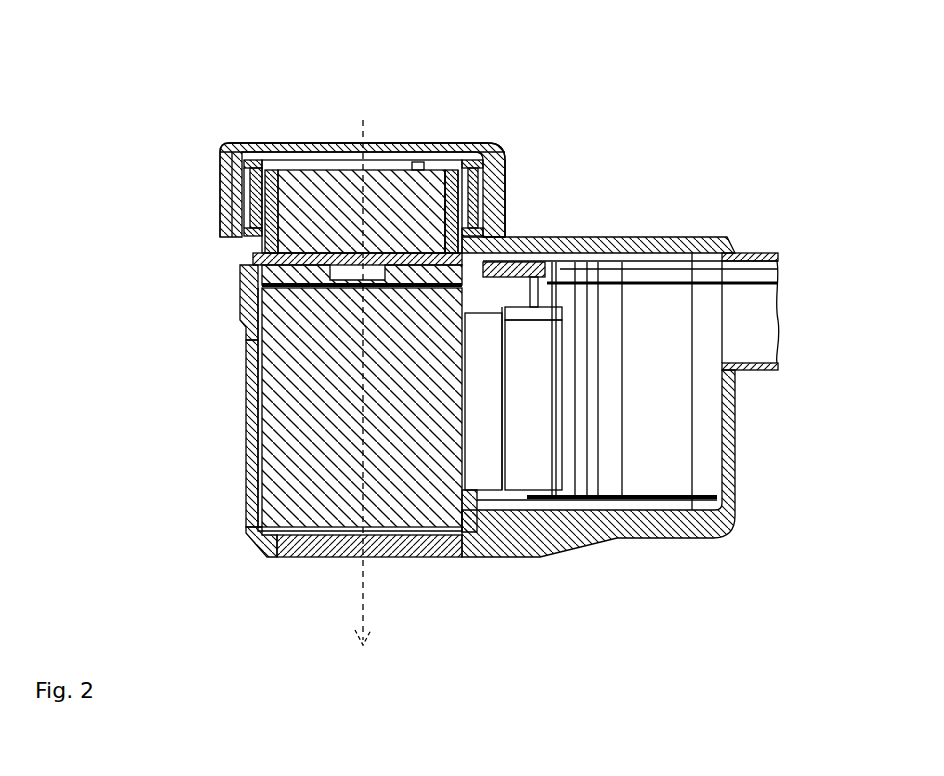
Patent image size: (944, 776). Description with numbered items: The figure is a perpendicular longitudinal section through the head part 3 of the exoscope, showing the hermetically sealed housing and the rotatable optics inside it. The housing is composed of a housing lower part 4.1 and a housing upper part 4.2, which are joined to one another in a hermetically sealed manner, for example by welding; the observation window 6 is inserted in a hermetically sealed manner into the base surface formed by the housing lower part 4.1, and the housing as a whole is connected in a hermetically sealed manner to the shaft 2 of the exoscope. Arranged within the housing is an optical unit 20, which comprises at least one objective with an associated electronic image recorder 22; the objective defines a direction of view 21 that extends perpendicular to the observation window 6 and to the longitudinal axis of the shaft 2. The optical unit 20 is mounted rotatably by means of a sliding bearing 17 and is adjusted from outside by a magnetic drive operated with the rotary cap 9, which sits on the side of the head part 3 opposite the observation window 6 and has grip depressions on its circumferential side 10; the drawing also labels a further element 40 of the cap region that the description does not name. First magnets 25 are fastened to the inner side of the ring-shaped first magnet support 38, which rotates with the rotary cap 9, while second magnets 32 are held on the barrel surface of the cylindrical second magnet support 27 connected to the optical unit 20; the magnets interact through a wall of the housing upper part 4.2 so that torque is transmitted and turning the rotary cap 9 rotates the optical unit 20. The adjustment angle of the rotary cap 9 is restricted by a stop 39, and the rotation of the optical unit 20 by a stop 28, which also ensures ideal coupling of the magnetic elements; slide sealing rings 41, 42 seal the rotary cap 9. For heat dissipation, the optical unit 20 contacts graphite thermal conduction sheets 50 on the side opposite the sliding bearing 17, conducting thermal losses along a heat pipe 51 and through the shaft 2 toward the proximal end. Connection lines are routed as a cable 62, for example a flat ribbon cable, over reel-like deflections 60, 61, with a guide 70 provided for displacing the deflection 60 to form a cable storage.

The shaft 2 is at (752, 253).
The head part 3 is at (706, 98).
The housing lower part 4.1 is at (252, 445).
The housing upper part 4.2 is at (245, 278).
The observation window 6 is at (405, 557).
The rotary cap 9 is at (282, 90).
The circumferential side 10 is at (233, 205).
The sliding bearing 17 is at (257, 510).
The optical unit 20 is at (280, 472).
The direction of view 21 is at (355, 603).
The electronic image recorder 22 is at (297, 286).
The first magnets 25 is at (471, 200).
The second magnet support 27 is at (290, 248).
The stop 28 is at (418, 162).
The second magnets 32 is at (453, 222).
The first magnet support 38 is at (508, 160).
The stop 39 is at (290, 143).
The cover 40 is at (490, 145).
The slide sealing ring 41 is at (247, 210).
The slide sealing ring 42 is at (245, 167).
The thermal conduction sheets 50 is at (245, 258).
The heat pipe 51 is at (677, 278).
The deflection 60 is at (536, 298).
The deflection 61 is at (582, 300).
The cable 62 is at (535, 467).
The guide 70 is at (650, 500).